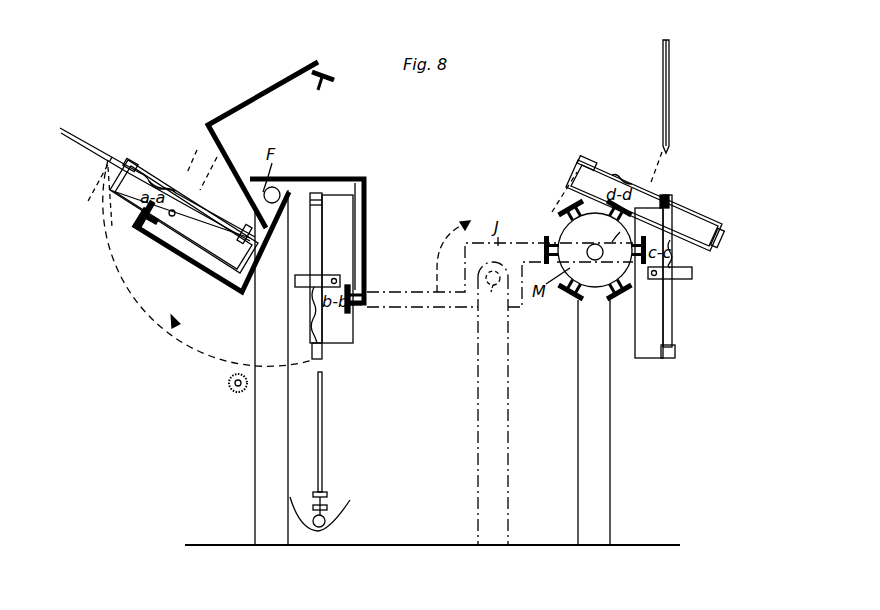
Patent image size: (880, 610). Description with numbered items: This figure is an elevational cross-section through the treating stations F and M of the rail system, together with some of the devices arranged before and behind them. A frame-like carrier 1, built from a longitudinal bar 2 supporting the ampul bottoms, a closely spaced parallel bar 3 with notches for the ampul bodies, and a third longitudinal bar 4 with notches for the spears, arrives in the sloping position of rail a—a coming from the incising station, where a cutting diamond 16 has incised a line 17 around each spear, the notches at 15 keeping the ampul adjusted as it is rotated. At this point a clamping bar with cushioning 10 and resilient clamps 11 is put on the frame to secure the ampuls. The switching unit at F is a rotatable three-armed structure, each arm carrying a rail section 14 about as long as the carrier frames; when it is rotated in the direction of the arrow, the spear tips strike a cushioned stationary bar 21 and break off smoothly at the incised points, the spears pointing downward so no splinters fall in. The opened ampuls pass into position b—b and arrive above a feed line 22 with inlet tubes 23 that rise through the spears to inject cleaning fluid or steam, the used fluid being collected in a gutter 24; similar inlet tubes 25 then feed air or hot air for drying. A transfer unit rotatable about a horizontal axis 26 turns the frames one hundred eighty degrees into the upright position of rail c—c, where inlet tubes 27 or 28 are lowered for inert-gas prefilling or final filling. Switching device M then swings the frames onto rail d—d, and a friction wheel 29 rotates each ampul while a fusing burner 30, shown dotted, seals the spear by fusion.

The frame-like carrier 1 is at (125, 198).
The longitudinal bar 2 is at (250, 228).
The parallel bar 3 is at (243, 228).
The third longitudinal bar 4 is at (133, 167).
The cushioning 10 is at (300, 275).
The resilient clamps 11 is at (316, 280).
The guide rails 14 is at (620, 298).
The pressing nose 15 is at (183, 178).
The cutting diamond 16 is at (98, 195).
The incised line 17 is at (142, 170).
The stationary bar 21 is at (236, 392).
The feed line 22 is at (326, 521).
The inlet tubes 23 is at (354, 432).
The gutter 24 is at (340, 512).
The inlet tubes 25 is at (323, 428).
The horizontal axis 26 is at (493, 289).
The inlet tubes 27 is at (696, 96).
The inlet tubes 28 is at (669, 94).
The friction wheel 29 is at (672, 196).
The fusing burner 30 is at (566, 183).